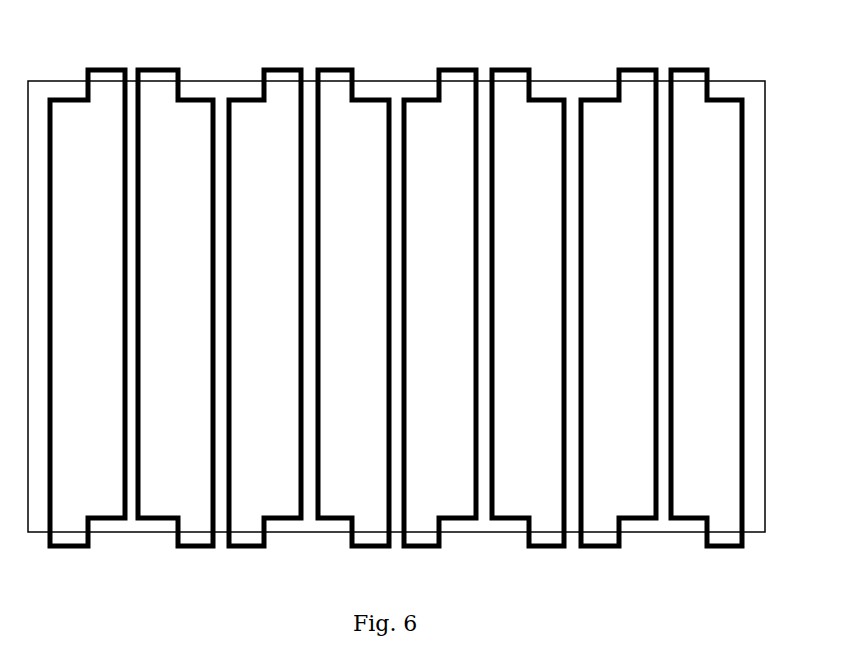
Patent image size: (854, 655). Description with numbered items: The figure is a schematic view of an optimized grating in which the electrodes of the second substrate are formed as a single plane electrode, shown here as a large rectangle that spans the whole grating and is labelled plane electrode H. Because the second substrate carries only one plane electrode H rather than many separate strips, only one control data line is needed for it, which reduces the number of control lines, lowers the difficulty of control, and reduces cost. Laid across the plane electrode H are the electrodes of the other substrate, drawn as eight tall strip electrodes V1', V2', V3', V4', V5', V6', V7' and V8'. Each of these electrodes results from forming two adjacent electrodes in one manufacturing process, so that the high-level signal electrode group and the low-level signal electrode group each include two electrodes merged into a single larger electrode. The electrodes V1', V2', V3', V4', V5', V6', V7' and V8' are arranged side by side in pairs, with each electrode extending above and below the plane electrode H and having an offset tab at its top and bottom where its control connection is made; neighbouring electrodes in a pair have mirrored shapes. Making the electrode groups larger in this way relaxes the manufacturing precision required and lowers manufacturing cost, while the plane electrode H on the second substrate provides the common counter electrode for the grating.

The electrode V1' is at (86, 286).
The electrode V2' is at (175, 286).
The electrode V3' is at (265, 286).
The electrode V4' is at (353, 286).
The electrode V5' is at (440, 286).
The electrode V6' is at (528, 286).
The electrode V7' is at (618, 286).
The electrode V8' is at (706, 286).
The plane electrode H is at (808, 319).